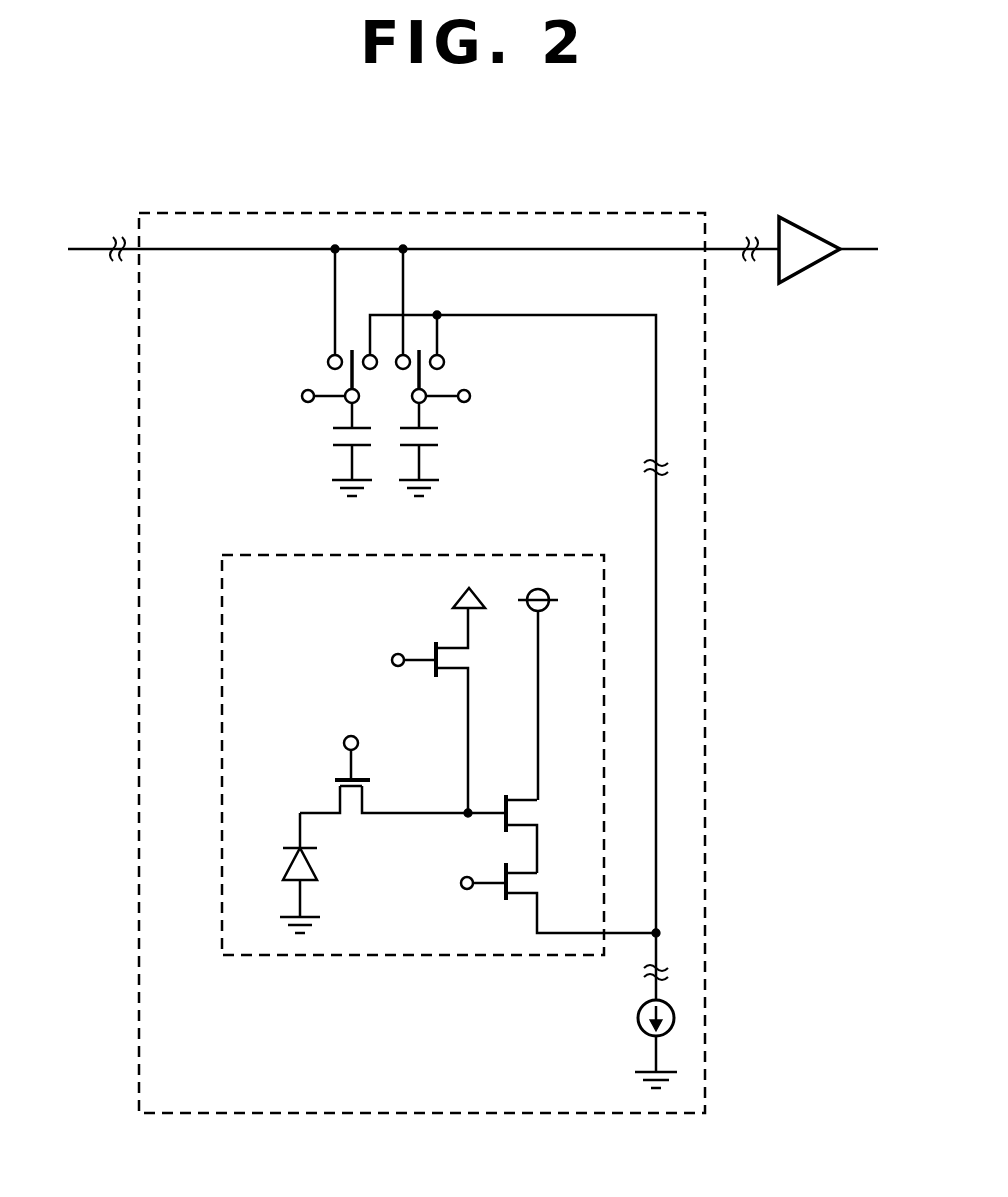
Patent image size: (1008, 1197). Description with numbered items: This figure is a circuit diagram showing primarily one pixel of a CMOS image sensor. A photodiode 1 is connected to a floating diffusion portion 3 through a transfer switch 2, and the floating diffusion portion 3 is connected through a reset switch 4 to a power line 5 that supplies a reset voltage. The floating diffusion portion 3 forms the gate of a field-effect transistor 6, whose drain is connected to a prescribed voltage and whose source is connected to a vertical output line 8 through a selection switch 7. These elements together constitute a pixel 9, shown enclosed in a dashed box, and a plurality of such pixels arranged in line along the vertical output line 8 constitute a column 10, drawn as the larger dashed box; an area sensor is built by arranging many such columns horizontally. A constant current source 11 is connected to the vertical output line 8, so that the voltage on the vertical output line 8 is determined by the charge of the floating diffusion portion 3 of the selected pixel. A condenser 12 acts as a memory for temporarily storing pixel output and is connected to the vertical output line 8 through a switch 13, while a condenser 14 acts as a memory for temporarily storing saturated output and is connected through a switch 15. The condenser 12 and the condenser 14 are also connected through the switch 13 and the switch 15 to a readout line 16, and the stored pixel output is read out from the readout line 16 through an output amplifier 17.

The photodiode 1 is at (283, 870).
The transfer switch 2 is at (335, 793).
The floating diffusion portion 3 is at (420, 812).
The reset switch 4 is at (430, 641).
The power line 5 is at (460, 600).
The field-effect transistor 6 is at (530, 813).
The selection switch 7 is at (500, 895).
The vertical output line 8 is at (655, 527).
The pixel 9 is at (222, 600).
The column 10 is at (139, 318).
The constant current source 11 is at (637, 1020).
The condenser 12 is at (440, 437).
The switch 13 is at (440, 377).
The condenser 14 is at (333, 437).
The switch 15 is at (335, 378).
The readout line 16 is at (503, 248).
The output amplifier 17 is at (806, 228).